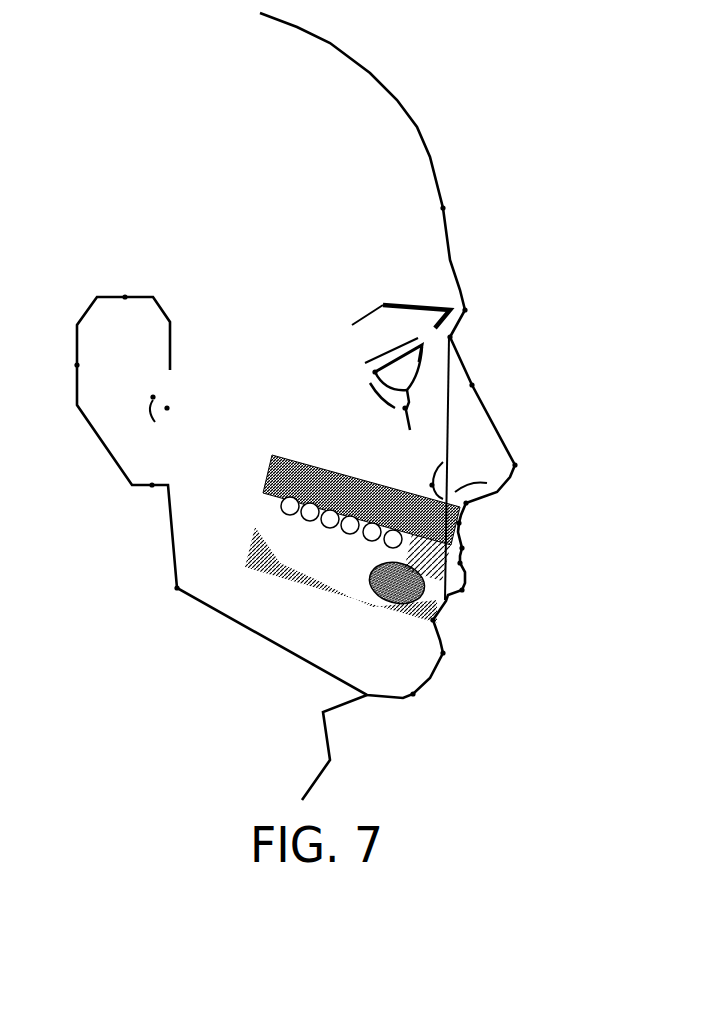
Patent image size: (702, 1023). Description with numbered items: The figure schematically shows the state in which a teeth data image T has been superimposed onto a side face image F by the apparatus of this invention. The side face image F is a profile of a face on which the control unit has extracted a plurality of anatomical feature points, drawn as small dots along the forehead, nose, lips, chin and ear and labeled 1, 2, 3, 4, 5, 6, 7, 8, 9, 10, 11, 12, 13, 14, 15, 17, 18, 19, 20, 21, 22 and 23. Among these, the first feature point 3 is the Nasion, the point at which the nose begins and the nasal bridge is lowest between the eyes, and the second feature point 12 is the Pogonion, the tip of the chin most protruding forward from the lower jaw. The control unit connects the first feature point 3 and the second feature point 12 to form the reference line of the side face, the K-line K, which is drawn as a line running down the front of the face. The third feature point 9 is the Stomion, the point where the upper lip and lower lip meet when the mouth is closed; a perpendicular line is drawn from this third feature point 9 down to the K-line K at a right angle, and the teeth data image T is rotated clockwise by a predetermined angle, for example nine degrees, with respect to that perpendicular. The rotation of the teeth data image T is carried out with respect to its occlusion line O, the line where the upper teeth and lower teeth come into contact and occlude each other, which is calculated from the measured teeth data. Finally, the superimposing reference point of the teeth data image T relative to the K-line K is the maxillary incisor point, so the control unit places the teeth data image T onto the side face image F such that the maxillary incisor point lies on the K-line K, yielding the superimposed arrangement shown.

The anatomical feature point 1 is at (451, 208).
The anatomical feature point 2 is at (472, 310).
The first feature point (Nasion) 3 is at (457, 340).
The anatomical feature point 4 is at (480, 385).
The anatomical feature point 5 is at (522, 467).
The anatomical feature point 6 is at (471, 509).
The anatomical feature point 7 is at (465, 523).
The anatomical feature point 8 is at (470, 548).
The third feature point (Stomion) 9 is at (467, 563).
The anatomical feature point 10 is at (474, 590).
The anatomical feature point 11 is at (446, 620).
The second feature point (Pogonion) 12 is at (455, 655).
The anatomical feature point 13 is at (424, 704).
The anatomical feature point 14 is at (363, 373).
The anatomical feature point 15 is at (419, 485).
The anatomical feature point 17 is at (164, 588).
The anatomical feature point 18 is at (126, 289).
The anatomical feature point 19 is at (66, 365).
The anatomical feature point 20 is at (151, 495).
The anatomical feature point 21 is at (179, 408).
The anatomical feature point 22 is at (155, 399).
The lower eyelid landmark 23 is at (417, 408).
The side face image F is at (392, 254).
The reference line of the side face (K-line) K is at (465, 438).
The teeth data image T is at (338, 500).
The occlusion line O is at (305, 520).